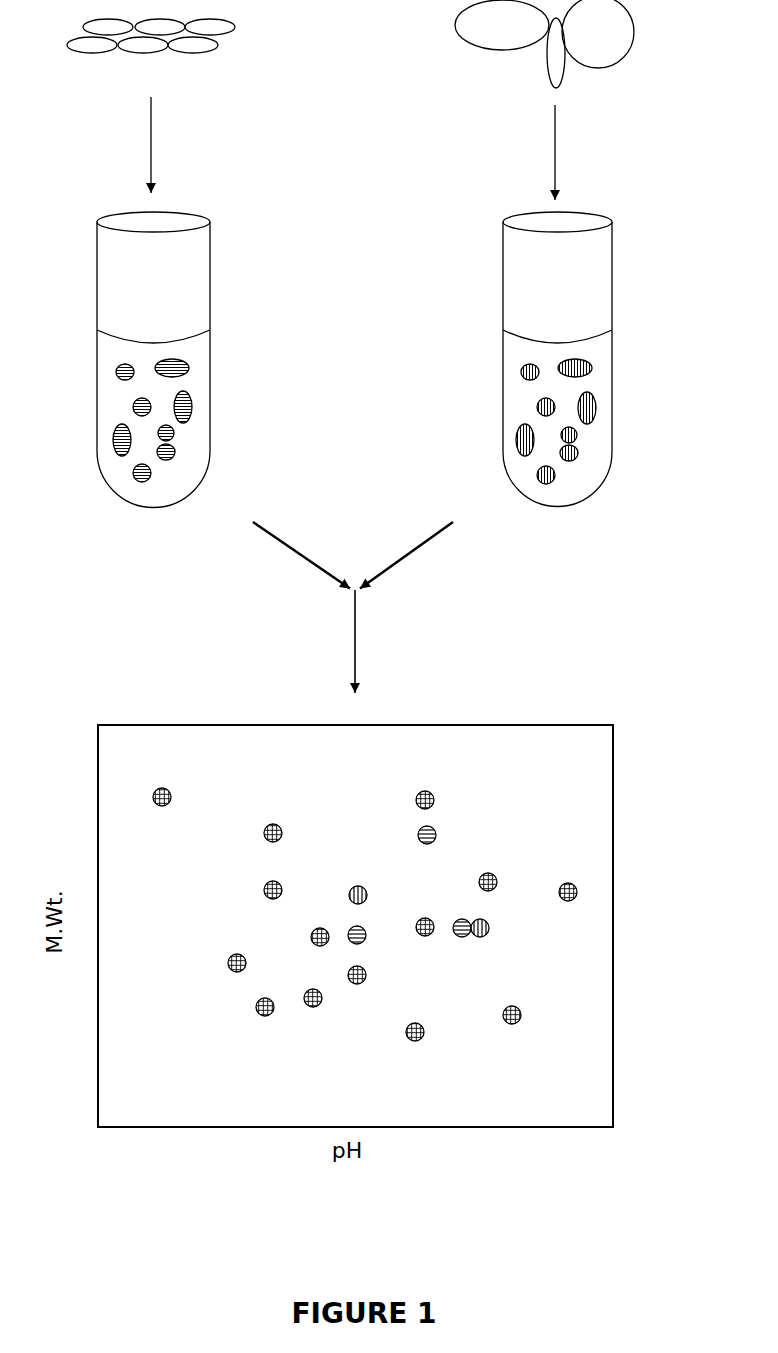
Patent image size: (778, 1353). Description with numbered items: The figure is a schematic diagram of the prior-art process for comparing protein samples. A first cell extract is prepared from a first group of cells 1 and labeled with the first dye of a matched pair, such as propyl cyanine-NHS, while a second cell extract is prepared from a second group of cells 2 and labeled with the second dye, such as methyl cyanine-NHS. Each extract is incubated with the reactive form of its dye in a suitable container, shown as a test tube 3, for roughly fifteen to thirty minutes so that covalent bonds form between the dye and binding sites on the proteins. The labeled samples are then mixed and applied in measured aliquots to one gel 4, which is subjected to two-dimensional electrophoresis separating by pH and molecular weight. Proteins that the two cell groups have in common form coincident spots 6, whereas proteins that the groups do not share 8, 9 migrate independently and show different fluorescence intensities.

The first group of cells 1 is at (166, 29).
The second group of cells 2 is at (561, 44).
The test tube 3 is at (392, 359).
The gel 4 is at (361, 898).
The coincident spots 6 is at (351, 945).
The protein not in common 8 is at (506, 916).
The protein not in common 9 is at (365, 952).